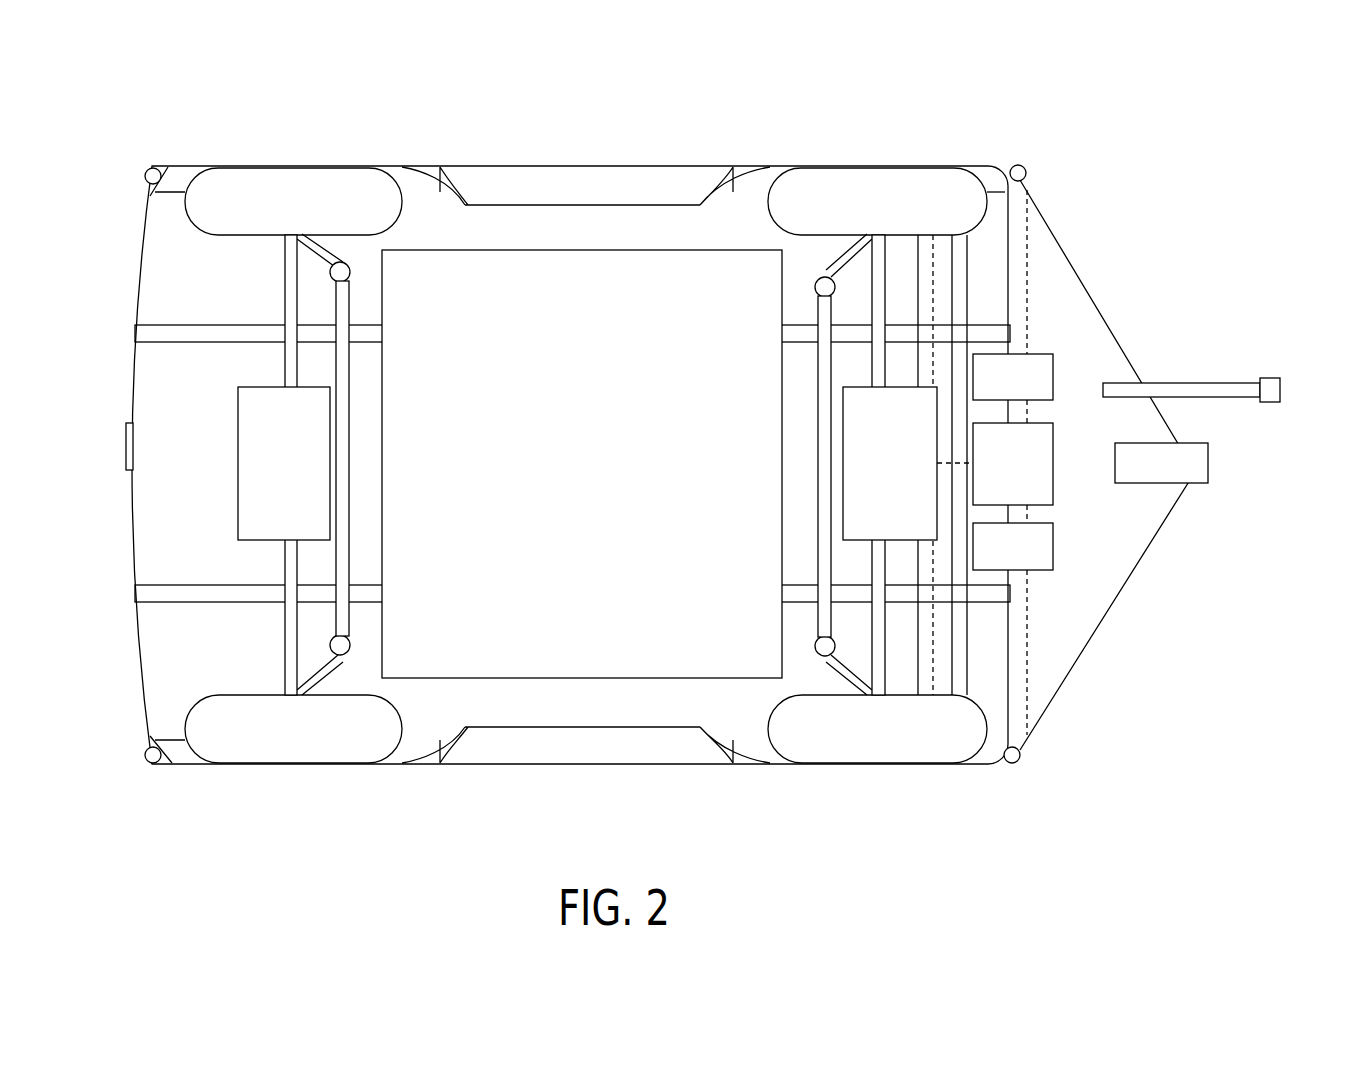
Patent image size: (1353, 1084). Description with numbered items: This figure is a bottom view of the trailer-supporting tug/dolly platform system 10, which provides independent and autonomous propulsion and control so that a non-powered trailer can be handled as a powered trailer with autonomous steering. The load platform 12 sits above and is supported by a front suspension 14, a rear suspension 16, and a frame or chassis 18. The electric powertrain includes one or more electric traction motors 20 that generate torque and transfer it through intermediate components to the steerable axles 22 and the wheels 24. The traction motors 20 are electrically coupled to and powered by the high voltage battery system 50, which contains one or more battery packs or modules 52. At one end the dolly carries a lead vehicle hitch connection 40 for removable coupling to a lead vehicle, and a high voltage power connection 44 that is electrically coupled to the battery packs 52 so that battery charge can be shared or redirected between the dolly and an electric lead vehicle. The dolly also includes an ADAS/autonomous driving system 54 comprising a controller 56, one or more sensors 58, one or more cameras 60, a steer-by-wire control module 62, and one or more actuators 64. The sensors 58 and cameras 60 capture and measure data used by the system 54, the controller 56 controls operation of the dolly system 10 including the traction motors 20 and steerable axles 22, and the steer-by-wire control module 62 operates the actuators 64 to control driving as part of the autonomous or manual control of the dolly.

The dolly platform system 10 is at (1272, 155).
The load platform 12 is at (487, 775).
The front suspension 14 is at (905, 252).
The rear suspension 16 is at (270, 240).
The frame or chassis 18 is at (158, 334).
The electric traction motor 20 is at (296, 485).
The steerable axle 22 is at (290, 567).
The wheel 24 is at (332, 174).
The lead vehicle hitch connection 40 is at (1195, 484).
The high voltage power connection 44 is at (1196, 384).
The high voltage battery system 50 is at (656, 236).
The battery pack 52 is at (604, 481).
The ADAS/autonomous driving system 54 is at (1064, 473).
The controller 56 is at (1026, 481).
The sensor 58 is at (156, 168).
The camera 60 is at (125, 452).
The steer-by-wire control module 62 is at (1026, 394).
The actuator 64 is at (1026, 563).